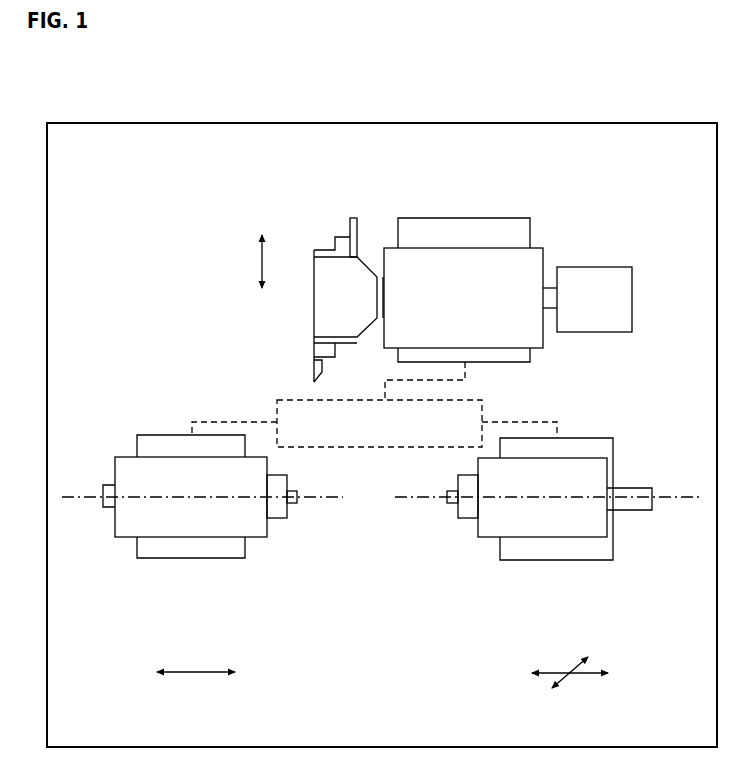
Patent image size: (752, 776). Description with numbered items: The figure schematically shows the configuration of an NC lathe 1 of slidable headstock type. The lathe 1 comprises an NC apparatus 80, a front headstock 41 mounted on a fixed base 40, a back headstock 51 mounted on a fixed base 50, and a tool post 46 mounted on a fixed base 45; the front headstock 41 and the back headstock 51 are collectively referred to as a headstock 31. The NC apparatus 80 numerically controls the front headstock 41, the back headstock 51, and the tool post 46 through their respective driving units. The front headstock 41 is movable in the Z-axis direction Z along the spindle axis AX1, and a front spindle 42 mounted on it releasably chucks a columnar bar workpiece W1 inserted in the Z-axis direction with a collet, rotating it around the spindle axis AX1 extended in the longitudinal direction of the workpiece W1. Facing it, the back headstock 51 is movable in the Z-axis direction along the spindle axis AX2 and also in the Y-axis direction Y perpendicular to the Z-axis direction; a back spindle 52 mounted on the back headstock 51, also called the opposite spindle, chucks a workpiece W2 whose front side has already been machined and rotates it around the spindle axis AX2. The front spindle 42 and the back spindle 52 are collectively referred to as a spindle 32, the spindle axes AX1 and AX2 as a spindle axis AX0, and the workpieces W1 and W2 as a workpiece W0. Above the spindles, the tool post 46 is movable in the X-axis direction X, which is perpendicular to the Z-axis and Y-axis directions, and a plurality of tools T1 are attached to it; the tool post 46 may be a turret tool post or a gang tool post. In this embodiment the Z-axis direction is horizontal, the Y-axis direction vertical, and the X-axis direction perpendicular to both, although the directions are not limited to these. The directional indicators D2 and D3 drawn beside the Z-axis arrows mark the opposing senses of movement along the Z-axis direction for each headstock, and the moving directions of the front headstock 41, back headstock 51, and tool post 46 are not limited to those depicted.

The NC lathe 1 is at (75, 100).
The tool T1 is at (352, 220).
The X-axis direction X is at (254, 261).
The fixed base 45 is at (430, 218).
The tool post 46 is at (493, 248).
The NC apparatus 80 is at (374, 404).
The spindle axis AX0 is at (198, 454).
The spindle axis AX1 is at (83, 493).
The spindle axis AX2 is at (682, 493).
The headstock 31 is at (175, 546).
The spindle 32 is at (372, 543).
The fixed base 40 is at (162, 558).
The front headstock 41 is at (115, 537).
The front spindle 42 is at (282, 520).
The fixed base 50 is at (573, 560).
The back headstock 51 is at (537, 537).
The back spindle 52 is at (462, 520).
The workpiece W0 is at (372, 525).
The workpiece W1 is at (297, 498).
The workpiece W2 is at (447, 498).
The Z-axis direction Z is at (382, 686).
The Y-axis direction Y is at (555, 689).
The second direction D2 is at (381, 672).
The third direction D3 is at (381, 672).